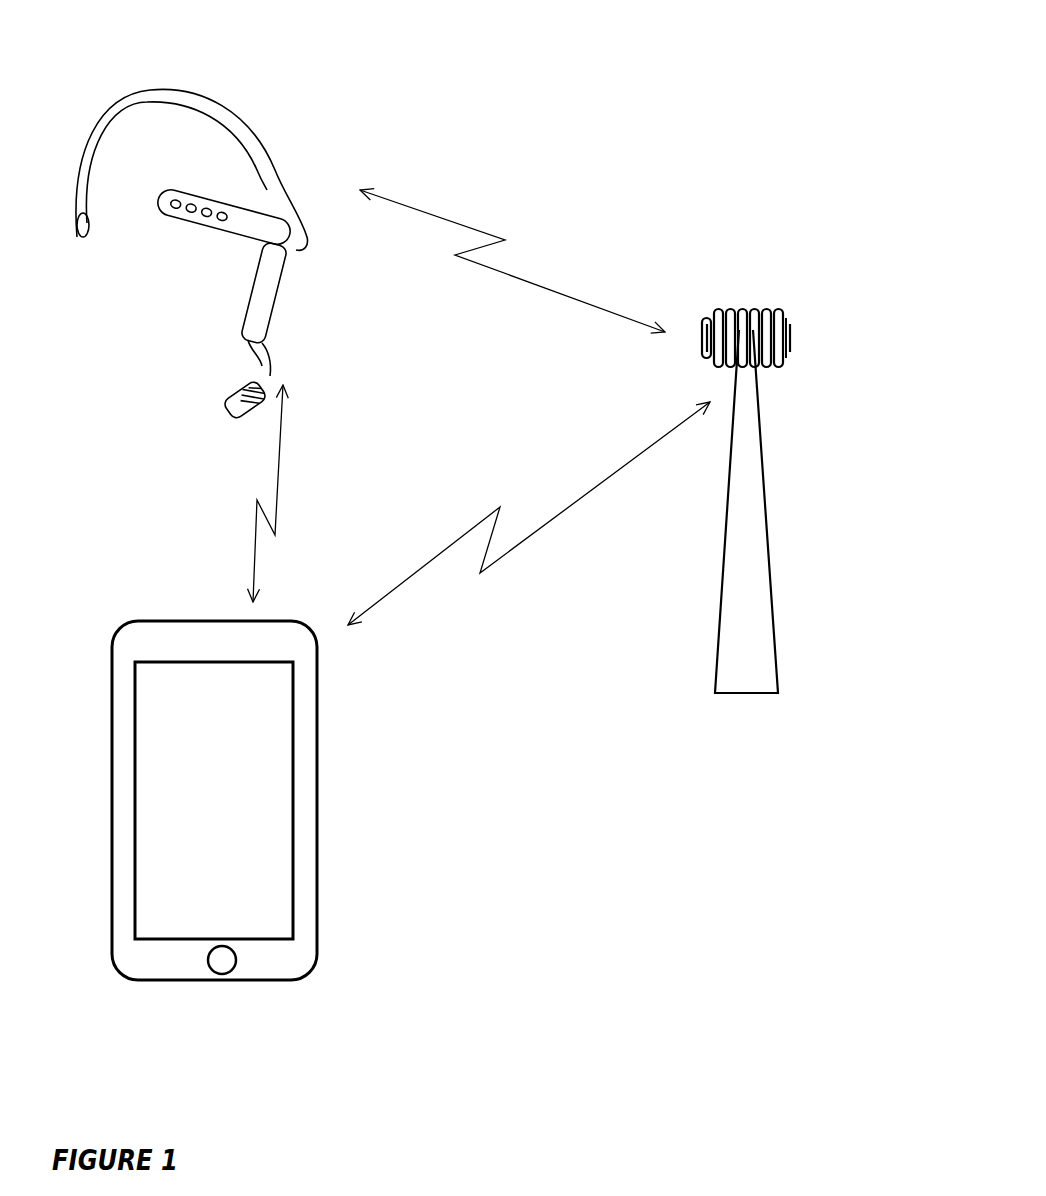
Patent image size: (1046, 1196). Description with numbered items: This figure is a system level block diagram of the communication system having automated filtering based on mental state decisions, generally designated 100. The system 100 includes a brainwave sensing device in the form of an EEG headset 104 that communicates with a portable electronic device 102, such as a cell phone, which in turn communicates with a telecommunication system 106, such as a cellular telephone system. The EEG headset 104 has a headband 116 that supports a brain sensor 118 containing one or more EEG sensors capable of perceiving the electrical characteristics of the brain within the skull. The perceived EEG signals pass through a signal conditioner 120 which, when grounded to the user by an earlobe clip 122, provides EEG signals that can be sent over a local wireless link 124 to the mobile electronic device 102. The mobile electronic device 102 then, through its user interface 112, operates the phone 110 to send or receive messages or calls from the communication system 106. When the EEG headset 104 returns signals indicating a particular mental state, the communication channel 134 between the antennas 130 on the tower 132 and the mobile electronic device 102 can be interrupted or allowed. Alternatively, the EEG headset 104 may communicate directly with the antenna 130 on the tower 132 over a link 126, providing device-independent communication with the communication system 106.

The communication system having automated filtering based on mental state decisions 100 is at (748, 76).
The portable electronic device 102 is at (335, 749).
The EEG headset 104 is at (351, 103).
The telecommunication system 106 is at (771, 419).
The phone 110 is at (307, 818).
The user interface 112 is at (222, 907).
The headband 116 is at (215, 110).
The brain sensor 118 is at (200, 200).
The signal conditioner 120 is at (282, 292).
The earlobe clip 122 is at (272, 358).
The local wireless link 124 is at (280, 460).
The link 126 is at (527, 278).
The antenna 130 is at (747, 307).
The tower 132 is at (752, 588).
The communication channel 134 is at (515, 548).